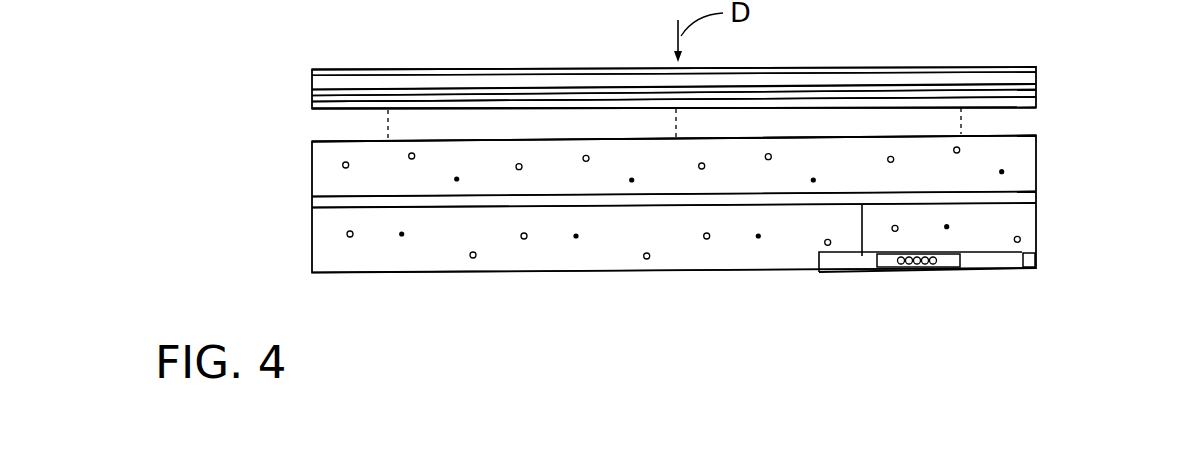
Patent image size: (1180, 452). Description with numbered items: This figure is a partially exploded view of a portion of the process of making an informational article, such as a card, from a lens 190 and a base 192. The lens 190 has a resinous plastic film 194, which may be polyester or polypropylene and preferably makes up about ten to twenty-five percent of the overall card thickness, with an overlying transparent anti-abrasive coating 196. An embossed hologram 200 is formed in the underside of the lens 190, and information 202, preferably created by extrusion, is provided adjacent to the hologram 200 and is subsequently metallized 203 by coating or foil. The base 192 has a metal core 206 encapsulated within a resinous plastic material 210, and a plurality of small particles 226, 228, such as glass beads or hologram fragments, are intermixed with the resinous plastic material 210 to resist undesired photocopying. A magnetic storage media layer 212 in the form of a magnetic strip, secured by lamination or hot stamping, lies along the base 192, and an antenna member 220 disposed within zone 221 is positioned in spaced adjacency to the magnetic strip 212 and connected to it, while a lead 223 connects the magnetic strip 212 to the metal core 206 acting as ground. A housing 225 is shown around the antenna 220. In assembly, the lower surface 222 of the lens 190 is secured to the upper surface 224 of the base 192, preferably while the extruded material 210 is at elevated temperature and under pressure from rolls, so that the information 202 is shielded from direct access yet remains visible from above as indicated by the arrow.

The lens 190 is at (646, 77).
The base 192 is at (661, 236).
The resinous plastic film 194 is at (1025, 80).
The transparent anti-abrasive coating 196 is at (1000, 68).
The embossed hologram 200 is at (928, 89).
The information 202 is at (847, 95).
The metallized layer 203 is at (757, 100).
The metal core 206 is at (1025, 197).
The resinous plastic material 210 is at (1022, 157).
The magnetic storage media layer 212 is at (830, 265).
The antenna member 220 is at (905, 267).
The zone 221 is at (1005, 262).
The lower surface of the lens 222 is at (332, 98).
The lead 223 is at (860, 242).
The upper surface of the base 224 is at (337, 135).
The coil housing 225 is at (961, 252).
The particle 226 is at (347, 235).
The particle 228 is at (348, 167).